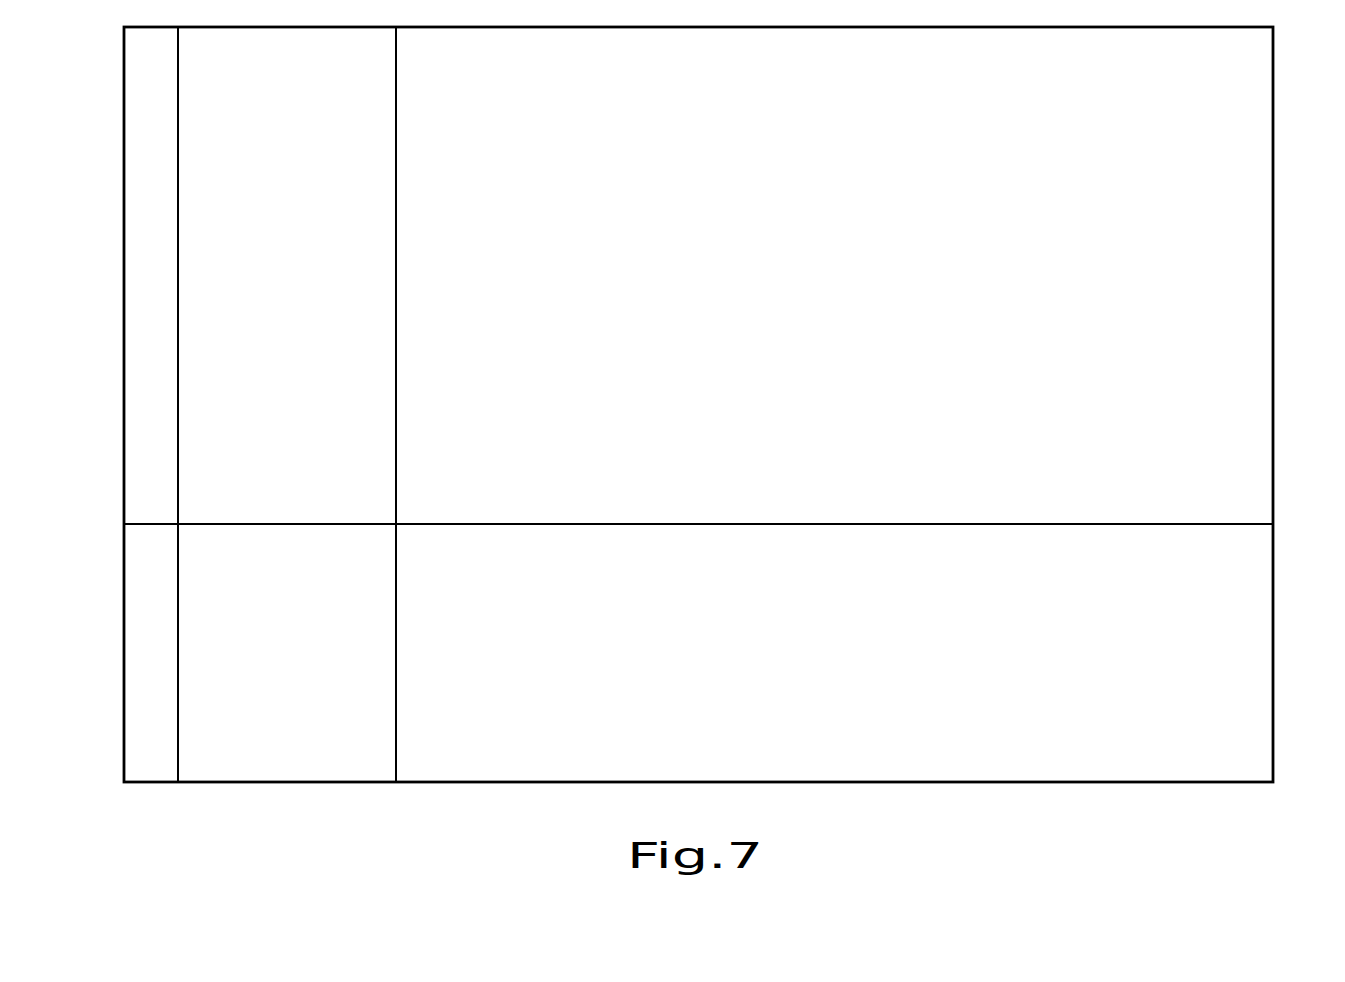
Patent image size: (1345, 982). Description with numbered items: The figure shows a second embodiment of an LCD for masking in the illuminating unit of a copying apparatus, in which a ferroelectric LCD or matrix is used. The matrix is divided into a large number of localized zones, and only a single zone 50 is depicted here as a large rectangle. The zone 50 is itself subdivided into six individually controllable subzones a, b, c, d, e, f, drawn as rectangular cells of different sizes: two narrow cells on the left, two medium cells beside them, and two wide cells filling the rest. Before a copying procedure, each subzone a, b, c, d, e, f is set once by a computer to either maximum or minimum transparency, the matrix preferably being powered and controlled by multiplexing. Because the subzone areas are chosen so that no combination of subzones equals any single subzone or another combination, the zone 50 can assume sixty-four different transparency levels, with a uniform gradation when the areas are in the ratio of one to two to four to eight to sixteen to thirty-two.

The zone 50 is at (734, 404).
The subzone a is at (142, 655).
The subzone b is at (160, 278).
The subzone c is at (270, 655).
The subzone d is at (287, 278).
The subzone e is at (840, 654).
The subzone f is at (840, 278).